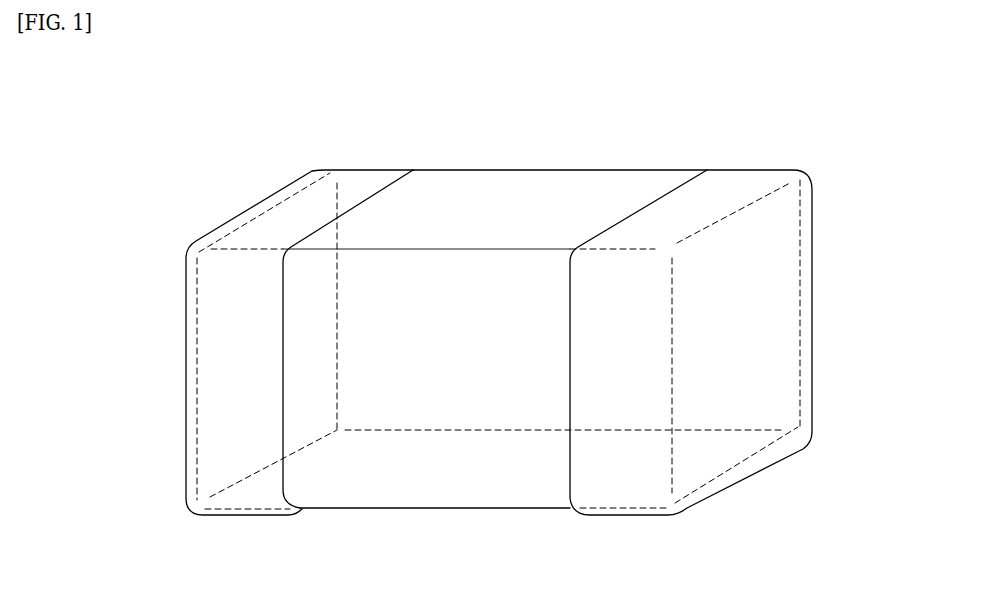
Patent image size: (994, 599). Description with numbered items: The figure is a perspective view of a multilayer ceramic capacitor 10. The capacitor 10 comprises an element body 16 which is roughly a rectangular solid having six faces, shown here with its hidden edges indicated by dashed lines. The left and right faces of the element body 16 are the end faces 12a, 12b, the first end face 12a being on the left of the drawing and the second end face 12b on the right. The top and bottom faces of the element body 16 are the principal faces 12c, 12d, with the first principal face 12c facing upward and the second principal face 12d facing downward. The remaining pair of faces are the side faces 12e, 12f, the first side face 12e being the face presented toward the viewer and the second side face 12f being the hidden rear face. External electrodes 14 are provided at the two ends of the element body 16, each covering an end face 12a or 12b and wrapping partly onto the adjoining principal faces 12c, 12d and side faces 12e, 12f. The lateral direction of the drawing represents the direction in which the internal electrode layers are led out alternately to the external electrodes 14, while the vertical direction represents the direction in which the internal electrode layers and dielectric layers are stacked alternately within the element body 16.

The multilayer ceramic capacitor 10 is at (758, 138).
The end face 12a is at (227, 348).
The end face 12b is at (773, 293).
The principal face 12c is at (495, 192).
The principal face 12d is at (508, 482).
The side face 12e is at (392, 470).
The side face 12f is at (587, 202).
The external electrode 14 is at (186, 363).
The element body 16 is at (451, 203).